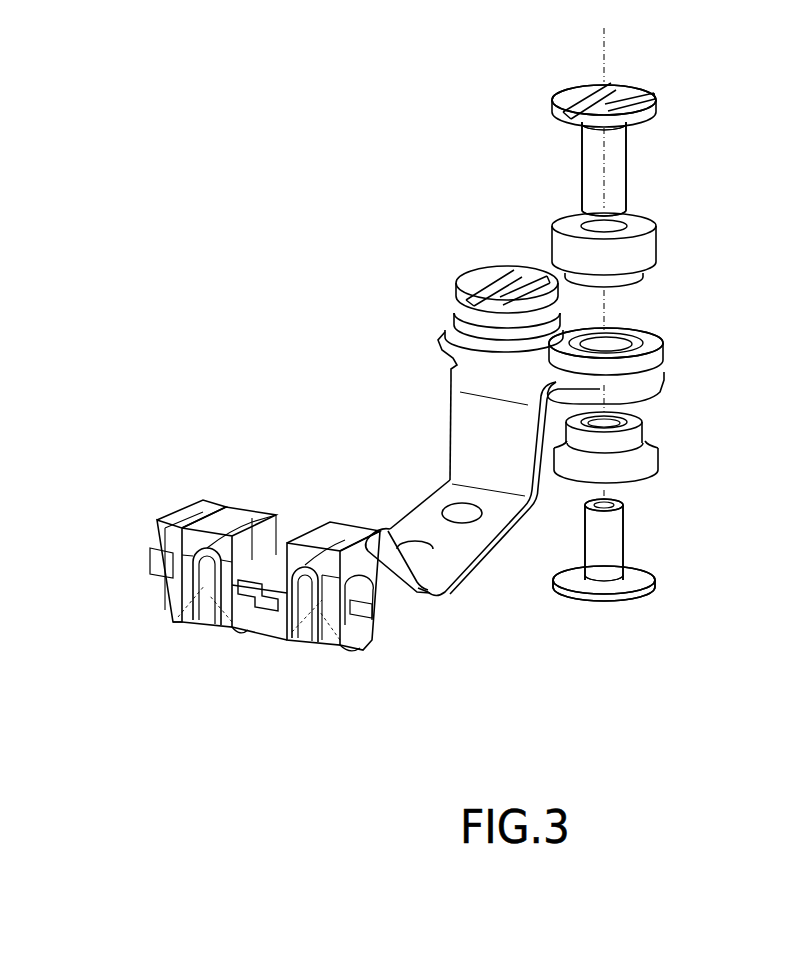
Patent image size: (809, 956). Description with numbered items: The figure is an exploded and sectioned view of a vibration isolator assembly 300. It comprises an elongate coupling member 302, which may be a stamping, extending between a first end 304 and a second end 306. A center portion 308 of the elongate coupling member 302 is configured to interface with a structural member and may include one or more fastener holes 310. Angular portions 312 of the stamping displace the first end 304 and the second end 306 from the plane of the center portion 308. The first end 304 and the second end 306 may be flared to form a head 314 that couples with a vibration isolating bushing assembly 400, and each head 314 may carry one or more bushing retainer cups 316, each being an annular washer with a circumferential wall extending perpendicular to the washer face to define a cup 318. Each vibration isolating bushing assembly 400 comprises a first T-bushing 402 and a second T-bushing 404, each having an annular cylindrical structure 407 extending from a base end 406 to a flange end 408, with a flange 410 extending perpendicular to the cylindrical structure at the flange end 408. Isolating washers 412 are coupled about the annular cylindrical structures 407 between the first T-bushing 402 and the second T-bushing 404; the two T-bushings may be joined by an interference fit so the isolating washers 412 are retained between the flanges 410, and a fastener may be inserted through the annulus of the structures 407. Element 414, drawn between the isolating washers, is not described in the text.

The vibration isolator assembly 300 is at (247, 145).
The elongate coupling member 302 is at (300, 460).
The first end 304 is at (458, 248).
The second end 306 is at (140, 573).
The center portion 308 is at (478, 552).
The fastener hole 310 is at (450, 510).
The angular portion 312 is at (452, 410).
The head 314 is at (665, 382).
The bushing retainer cup 316 is at (456, 336).
The cup 318 is at (646, 336).
The vibration isolating bushing assembly 400 is at (713, 197).
The first T-bushing 402 is at (673, 96).
The second T-bushing 404 is at (672, 605).
The base end 406 is at (580, 214).
The annular cylindrical structure 407 is at (628, 165).
The flange end 408 is at (576, 124).
The flange 410 is at (574, 96).
The isolating washer 412 is at (652, 240).
The spacer 414 is at (647, 428).